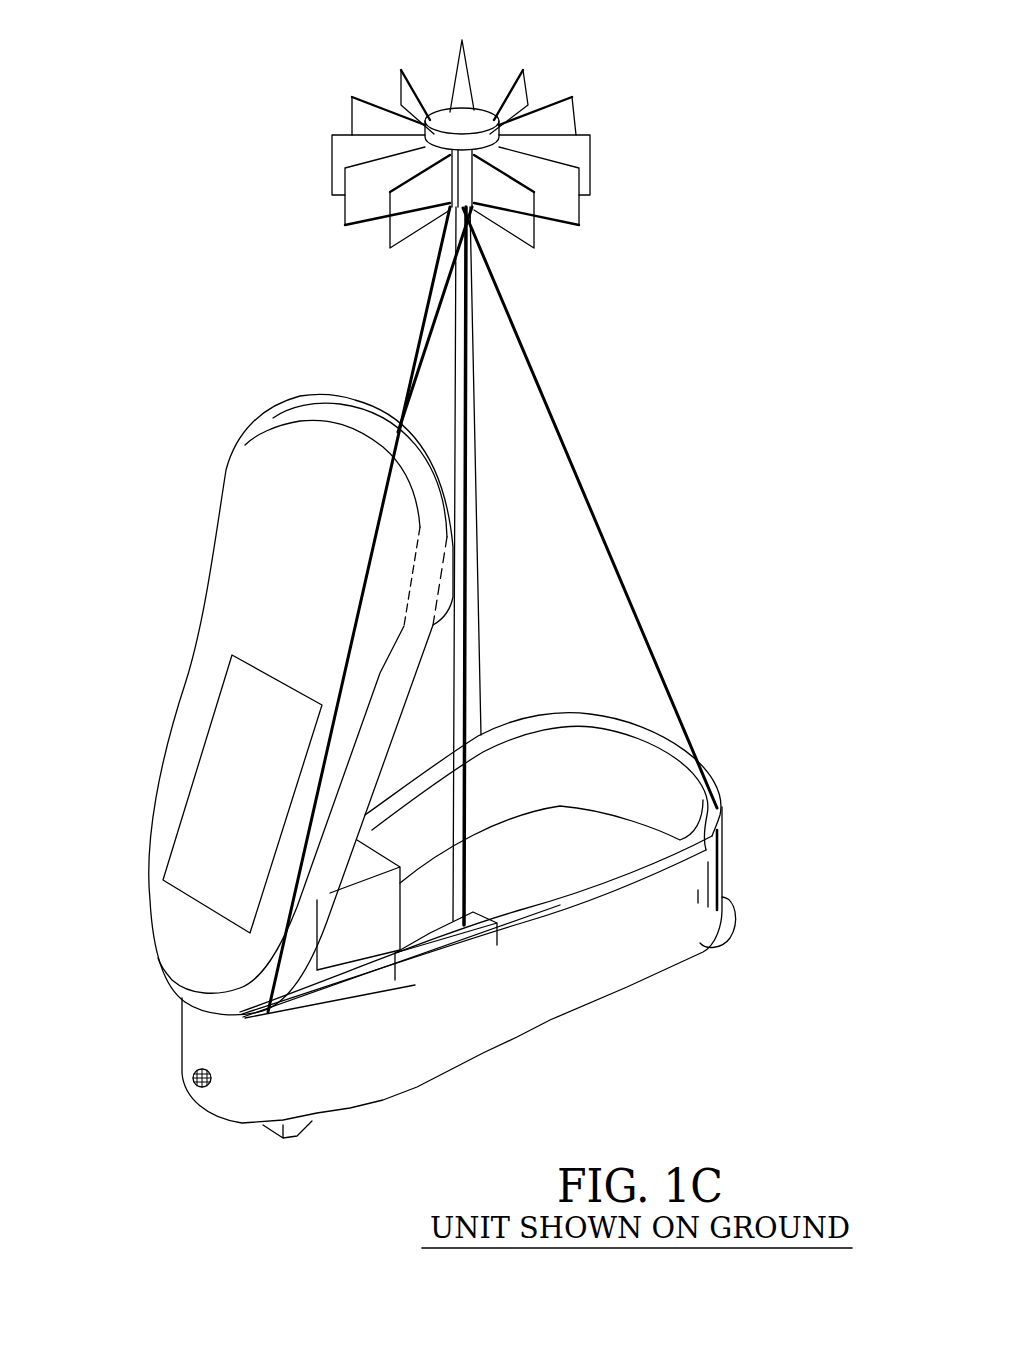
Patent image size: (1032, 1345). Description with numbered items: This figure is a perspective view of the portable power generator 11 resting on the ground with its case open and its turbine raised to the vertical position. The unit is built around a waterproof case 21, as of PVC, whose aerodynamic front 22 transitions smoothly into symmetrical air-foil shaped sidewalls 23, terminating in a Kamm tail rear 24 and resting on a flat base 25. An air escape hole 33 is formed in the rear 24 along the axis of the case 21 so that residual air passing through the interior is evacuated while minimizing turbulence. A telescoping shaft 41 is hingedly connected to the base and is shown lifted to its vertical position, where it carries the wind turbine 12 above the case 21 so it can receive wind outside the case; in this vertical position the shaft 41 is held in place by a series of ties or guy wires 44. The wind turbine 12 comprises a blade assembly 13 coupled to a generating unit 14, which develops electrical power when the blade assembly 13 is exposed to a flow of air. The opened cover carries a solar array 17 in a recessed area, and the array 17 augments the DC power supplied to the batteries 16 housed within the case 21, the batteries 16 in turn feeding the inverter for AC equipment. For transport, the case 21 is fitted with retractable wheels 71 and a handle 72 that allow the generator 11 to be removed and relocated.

The portable power generator 11 is at (247, 302).
The wind turbine 12 is at (614, 119).
The blade assembly 13 is at (523, 88).
The generating unit 14 is at (458, 115).
The batteries 16 is at (367, 872).
The solar array 17 is at (240, 760).
The waterproof case 21 is at (569, 711).
The aerodynamic front 22 is at (711, 762).
The sidewalls 23 is at (428, 765).
The Kamm tail rear 24 is at (192, 1041).
The flat base 25 is at (556, 1018).
The air escape hole 33 is at (198, 1086).
The telescoping shaft 41 is at (462, 477).
The guy wires 44 is at (408, 372).
The retractable wheels 71 is at (730, 922).
The handle 72 is at (293, 1140).